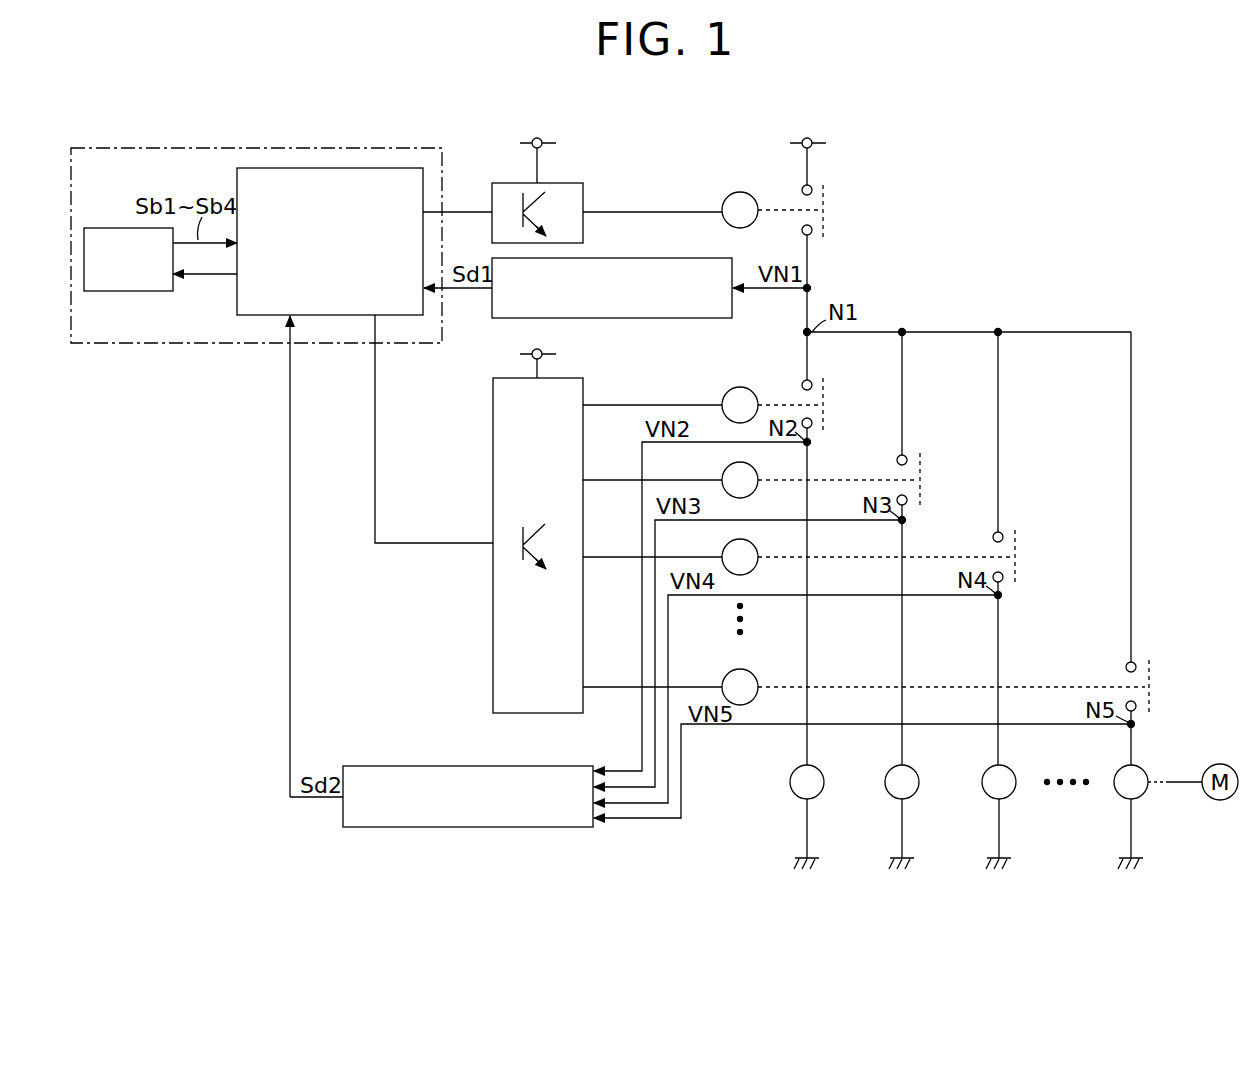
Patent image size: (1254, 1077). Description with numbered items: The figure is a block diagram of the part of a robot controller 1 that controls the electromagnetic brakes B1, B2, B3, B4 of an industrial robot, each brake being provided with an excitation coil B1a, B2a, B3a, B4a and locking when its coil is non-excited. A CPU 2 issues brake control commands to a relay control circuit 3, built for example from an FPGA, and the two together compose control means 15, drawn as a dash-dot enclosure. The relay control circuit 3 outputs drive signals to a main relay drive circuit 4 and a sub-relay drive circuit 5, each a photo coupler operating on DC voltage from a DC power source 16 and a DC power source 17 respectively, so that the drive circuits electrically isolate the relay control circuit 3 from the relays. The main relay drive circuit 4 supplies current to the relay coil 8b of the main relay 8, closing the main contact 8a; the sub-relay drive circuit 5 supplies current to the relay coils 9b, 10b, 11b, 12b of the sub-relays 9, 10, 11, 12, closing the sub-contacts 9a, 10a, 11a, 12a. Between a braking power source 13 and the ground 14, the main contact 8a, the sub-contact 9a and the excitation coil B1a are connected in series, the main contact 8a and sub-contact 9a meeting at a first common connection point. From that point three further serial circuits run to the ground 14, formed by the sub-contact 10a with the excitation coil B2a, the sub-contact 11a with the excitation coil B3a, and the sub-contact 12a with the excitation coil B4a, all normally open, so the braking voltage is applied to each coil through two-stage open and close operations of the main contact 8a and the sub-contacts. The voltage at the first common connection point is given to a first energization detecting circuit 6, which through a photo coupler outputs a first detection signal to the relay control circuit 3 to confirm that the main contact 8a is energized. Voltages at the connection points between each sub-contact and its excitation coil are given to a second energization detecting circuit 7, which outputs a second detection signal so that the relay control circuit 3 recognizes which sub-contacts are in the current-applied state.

The robot controller 1 is at (658, 140).
The CPU 2 is at (105, 228).
The relay control circuit 3 is at (237, 180).
The main relay drive circuit 4 is at (512, 183).
The sub-relay drive circuit 5 is at (493, 463).
The first energization detecting circuit 6 is at (660, 318).
The second energization detecting circuit 7 is at (413, 766).
The main relay 8 is at (792, 194).
The main contact 8a is at (812, 236).
The relay coil 8b is at (729, 197).
The sub-relay 9 is at (792, 385).
The sub-contact 9a is at (818, 378).
The relay coil 9b is at (728, 392).
The sub-relay 10 is at (888, 463).
The sub-contact 10a is at (920, 447).
The relay coil 10b is at (724, 470).
The sub-relay 11 is at (984, 540).
The sub-contact 11a is at (1010, 530).
The relay coil 11b is at (724, 547).
The sub-relay 12 is at (1118, 667).
The sub-contact 12a is at (1149, 653).
The relay coil 12b is at (728, 674).
The braking power source 13 is at (804, 139).
The ground 14 is at (822, 876).
The control means 15 is at (288, 146).
The DC power source 16 is at (534, 139).
The DC power source 17 is at (532, 351).
The electromagnetic brake B1 is at (792, 796).
The electromagnetic brake B2 is at (887, 796).
The electromagnetic brake B3 is at (983, 796).
The electromagnetic brake B4 is at (1115, 796).
The excitation coil B1a is at (796, 774).
The excitation coil B2a is at (891, 774).
The excitation coil B3a is at (988, 774).
The excitation coil B4a is at (1120, 774).